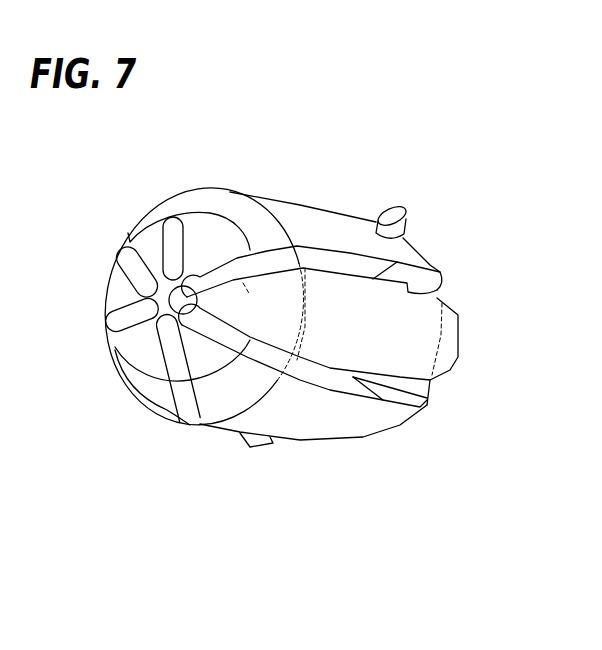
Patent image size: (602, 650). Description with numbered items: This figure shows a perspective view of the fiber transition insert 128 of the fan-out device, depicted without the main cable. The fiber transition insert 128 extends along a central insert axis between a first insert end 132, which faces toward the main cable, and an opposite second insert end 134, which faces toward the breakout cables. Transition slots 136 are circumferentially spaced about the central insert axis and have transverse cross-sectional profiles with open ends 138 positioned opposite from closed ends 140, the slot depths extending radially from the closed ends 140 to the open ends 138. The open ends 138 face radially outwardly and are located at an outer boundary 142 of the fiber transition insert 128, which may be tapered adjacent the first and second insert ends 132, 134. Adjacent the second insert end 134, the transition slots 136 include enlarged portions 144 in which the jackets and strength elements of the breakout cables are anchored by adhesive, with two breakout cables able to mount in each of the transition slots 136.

The fiber transition insert 128 is at (258, 183).
The first insert end 132 is at (112, 397).
The second insert end 134 is at (470, 275).
The transition slots 136 is at (288, 258).
The open ends 138 is at (341, 252).
The closed ends 140 is at (187, 295).
The outer boundary 142 is at (217, 430).
The enlarged portions 144 is at (422, 268).